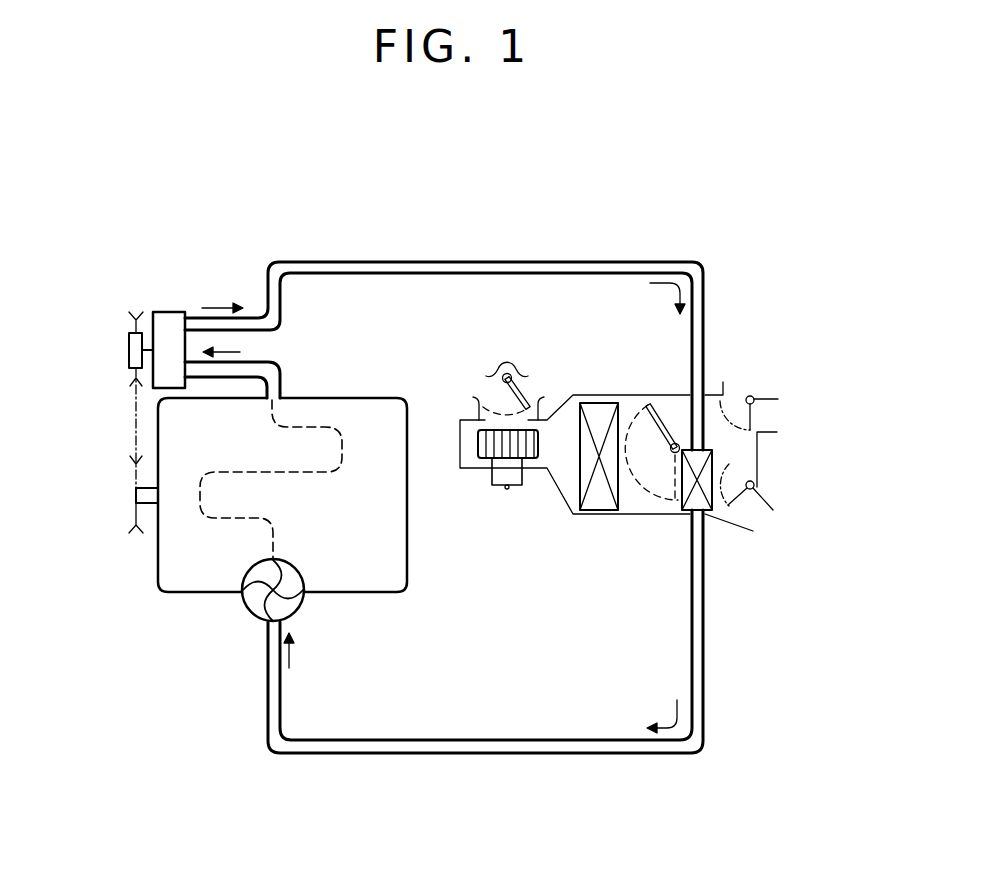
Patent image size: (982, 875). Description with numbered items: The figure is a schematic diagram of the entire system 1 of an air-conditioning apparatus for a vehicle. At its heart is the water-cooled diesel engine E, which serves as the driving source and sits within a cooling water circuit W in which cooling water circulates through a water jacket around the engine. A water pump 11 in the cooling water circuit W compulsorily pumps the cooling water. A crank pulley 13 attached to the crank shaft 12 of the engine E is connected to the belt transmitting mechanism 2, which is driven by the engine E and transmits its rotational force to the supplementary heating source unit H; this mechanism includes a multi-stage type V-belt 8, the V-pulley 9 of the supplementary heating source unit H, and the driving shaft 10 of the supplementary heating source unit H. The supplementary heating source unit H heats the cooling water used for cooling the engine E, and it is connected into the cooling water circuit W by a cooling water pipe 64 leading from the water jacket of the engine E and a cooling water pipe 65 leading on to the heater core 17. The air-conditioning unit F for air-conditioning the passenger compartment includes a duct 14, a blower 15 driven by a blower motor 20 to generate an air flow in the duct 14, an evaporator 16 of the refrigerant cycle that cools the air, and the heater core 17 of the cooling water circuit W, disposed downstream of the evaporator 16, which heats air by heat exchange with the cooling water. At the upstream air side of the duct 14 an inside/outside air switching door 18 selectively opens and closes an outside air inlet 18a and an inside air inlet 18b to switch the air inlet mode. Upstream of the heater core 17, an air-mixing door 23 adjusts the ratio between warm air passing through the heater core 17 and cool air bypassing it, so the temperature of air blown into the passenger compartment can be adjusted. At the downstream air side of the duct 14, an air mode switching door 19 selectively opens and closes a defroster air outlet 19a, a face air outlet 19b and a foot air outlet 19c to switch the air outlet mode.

The entire system 1 is at (232, 231).
The belt transmitting mechanism 2 is at (131, 306).
The multi-stage type V-belt 8 is at (133, 430).
The V-pulley of the supplementary heating source unit 9 is at (133, 366).
The driving shaft of the supplementary heating source unit 10 is at (129, 348).
The water pump 11 is at (247, 607).
The crank shaft 12 is at (150, 495).
The crank pulley 13 is at (134, 518).
The duct 14 is at (578, 516).
The blower 15 is at (485, 445).
The evaporator 16 is at (603, 498).
The heater core 17 is at (707, 520).
The inside/outside air switching door 18 is at (522, 393).
The outside air inlet 18a is at (483, 390).
The inside air inlet 18b is at (523, 386).
The air mode switching door 19 is at (768, 493).
The defroster air outlet 19a is at (738, 385).
The face air outlet 19b is at (768, 415).
The foot air outlet 19c is at (757, 512).
The blower motor 20 is at (507, 488).
The air-mixing door 23 is at (648, 404).
The cooling water pipe 64 is at (275, 380).
The cooling water pipe 65 is at (418, 268).
The supplementary heating source unit H is at (157, 308).
The water-cooled diesel engine E is at (380, 597).
The air-conditioning unit F is at (721, 352).
The cooling water circuit W is at (308, 752).